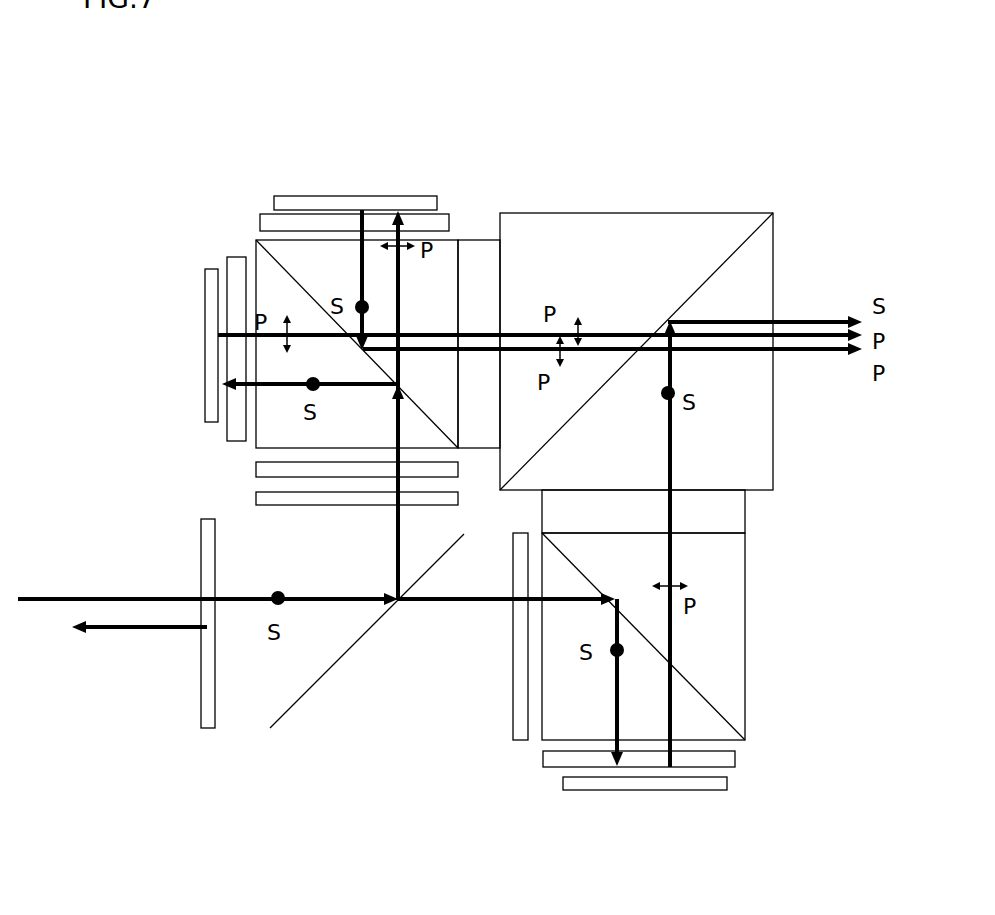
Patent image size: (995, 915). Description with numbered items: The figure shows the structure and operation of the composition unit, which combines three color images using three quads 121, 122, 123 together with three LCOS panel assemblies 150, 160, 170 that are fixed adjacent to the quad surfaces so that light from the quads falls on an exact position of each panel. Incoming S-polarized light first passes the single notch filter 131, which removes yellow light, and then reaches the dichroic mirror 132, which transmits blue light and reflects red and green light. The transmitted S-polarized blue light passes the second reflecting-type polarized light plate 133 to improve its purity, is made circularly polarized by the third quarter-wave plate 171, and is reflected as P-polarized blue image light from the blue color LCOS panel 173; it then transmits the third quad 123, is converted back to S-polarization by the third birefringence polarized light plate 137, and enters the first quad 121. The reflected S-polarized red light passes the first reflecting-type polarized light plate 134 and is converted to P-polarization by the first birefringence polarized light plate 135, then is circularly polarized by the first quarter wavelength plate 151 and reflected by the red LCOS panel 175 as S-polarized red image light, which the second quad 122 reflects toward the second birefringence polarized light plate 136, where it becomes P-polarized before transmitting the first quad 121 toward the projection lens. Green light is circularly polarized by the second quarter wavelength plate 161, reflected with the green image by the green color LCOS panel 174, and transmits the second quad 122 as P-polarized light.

The first quad 121 is at (714, 228).
The second quad 122 is at (443, 284).
The third quad 123 is at (728, 632).
The notch filter 131 is at (201, 686).
The dichroic mirror 132 is at (345, 652).
The second reflecting-type polarized light plate 133 is at (515, 691).
The first reflecting-type polarized light plate 134 is at (308, 510).
The first birefringence polarized light plate 135 is at (256, 466).
The second birefringence polarized light plate 136 is at (483, 264).
The third birefringence polarized light plate 137 is at (745, 507).
The LCOS panel assembly 150 is at (313, 168).
The first quarter wavelength plate 151 is at (262, 221).
The LCOS panel assembly 160 is at (167, 363).
The second quarter wavelength plate 161 is at (234, 262).
The LCOS panel assembly 170 is at (684, 817).
The third quarter-wave plate 171 is at (735, 760).
The blue color LCOS panel 173 is at (592, 785).
The green color LCOS panel 174 is at (210, 315).
The red LCOS panel 175 is at (353, 200).